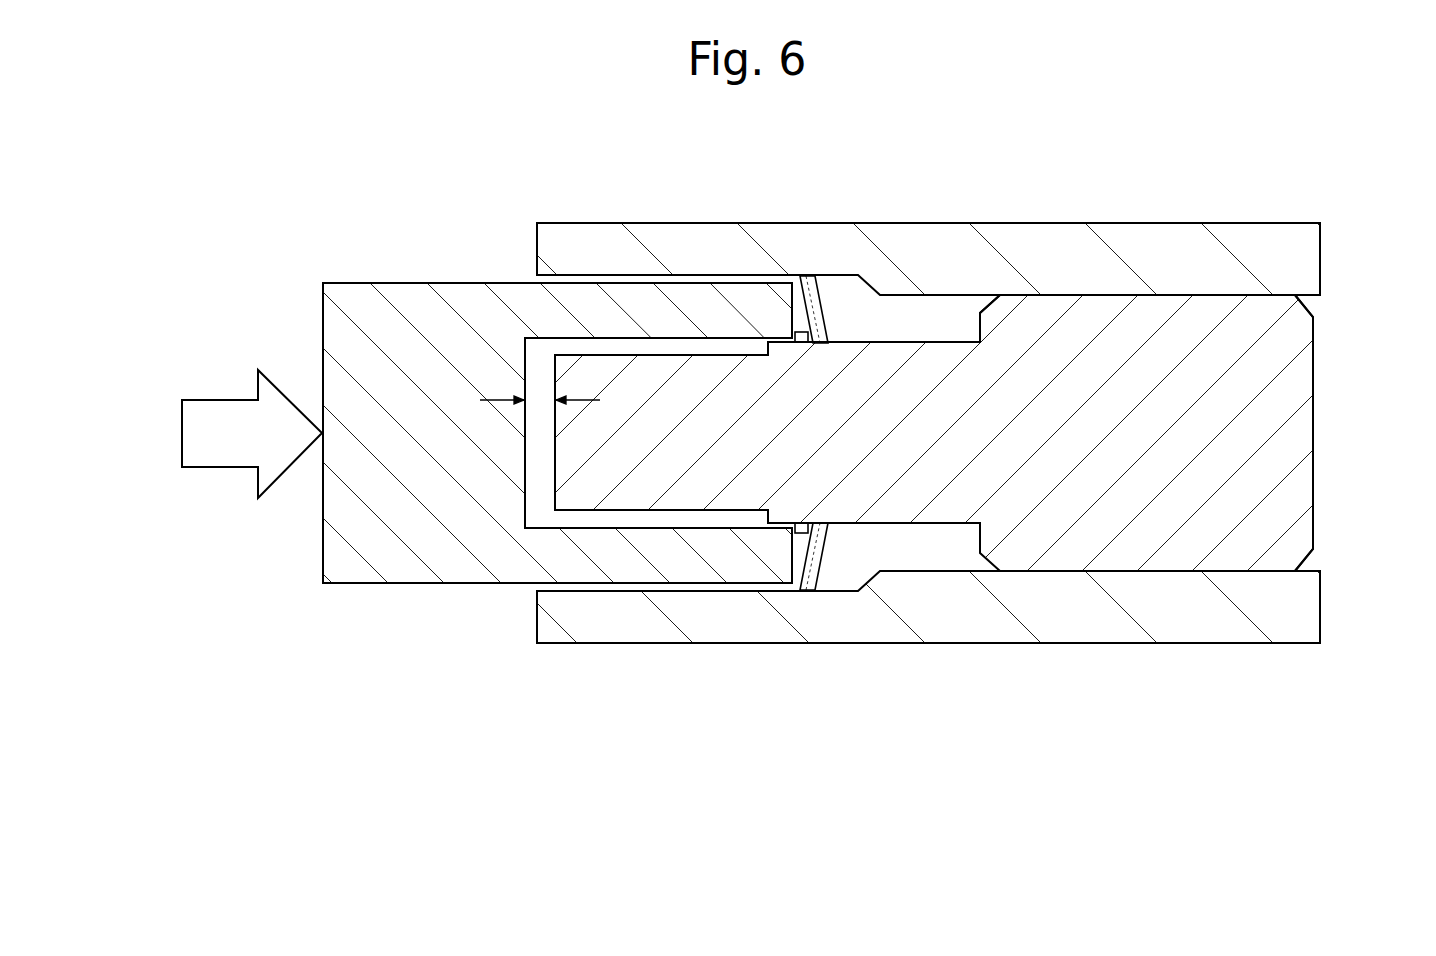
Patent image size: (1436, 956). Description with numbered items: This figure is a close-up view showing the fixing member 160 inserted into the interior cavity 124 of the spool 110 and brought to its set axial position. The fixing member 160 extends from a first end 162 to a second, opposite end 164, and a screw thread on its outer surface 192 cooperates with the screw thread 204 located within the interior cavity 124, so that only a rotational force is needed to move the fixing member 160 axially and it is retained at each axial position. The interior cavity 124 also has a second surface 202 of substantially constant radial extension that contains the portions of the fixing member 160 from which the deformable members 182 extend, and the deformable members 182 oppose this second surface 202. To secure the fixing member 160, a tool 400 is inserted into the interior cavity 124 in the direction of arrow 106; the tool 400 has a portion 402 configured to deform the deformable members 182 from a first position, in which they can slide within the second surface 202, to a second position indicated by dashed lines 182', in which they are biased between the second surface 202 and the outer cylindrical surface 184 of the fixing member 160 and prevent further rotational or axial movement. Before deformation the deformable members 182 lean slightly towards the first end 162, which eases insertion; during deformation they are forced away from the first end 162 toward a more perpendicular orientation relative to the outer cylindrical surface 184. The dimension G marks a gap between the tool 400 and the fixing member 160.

The arrow 106 is at (223, 415).
The spool 110 is at (1265, 245).
The interior cavity 124 is at (945, 320).
The fixing member 160 is at (1266, 371).
The first end 162 is at (557, 495).
The second end 164 is at (1315, 498).
The deformable members 182 is at (785, 251).
The dashed lines 182' is at (834, 616).
The outer cylindrical surface 184 is at (890, 343).
The outer surface 192 is at (1145, 641).
The second surface 202 is at (648, 590).
The screw thread 204 is at (1093, 300).
The tool 400 is at (352, 572).
The portion 402 is at (598, 297).
The gap G is at (495, 400).